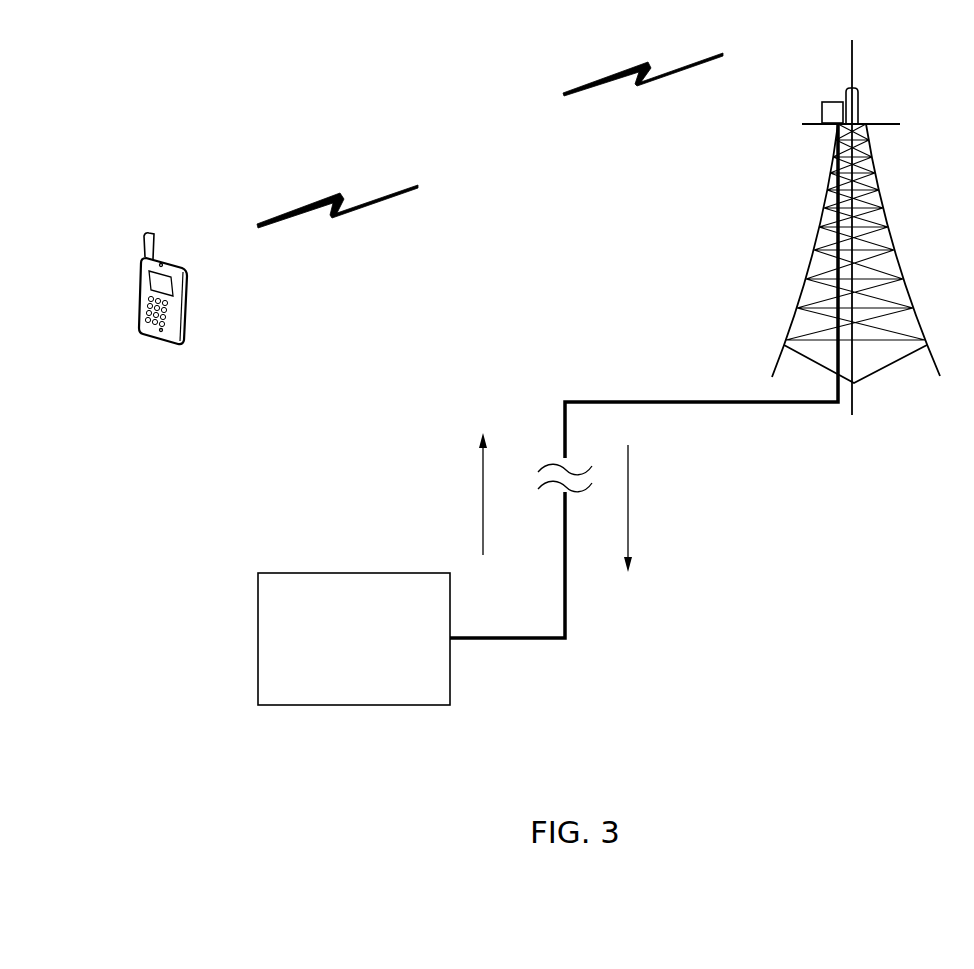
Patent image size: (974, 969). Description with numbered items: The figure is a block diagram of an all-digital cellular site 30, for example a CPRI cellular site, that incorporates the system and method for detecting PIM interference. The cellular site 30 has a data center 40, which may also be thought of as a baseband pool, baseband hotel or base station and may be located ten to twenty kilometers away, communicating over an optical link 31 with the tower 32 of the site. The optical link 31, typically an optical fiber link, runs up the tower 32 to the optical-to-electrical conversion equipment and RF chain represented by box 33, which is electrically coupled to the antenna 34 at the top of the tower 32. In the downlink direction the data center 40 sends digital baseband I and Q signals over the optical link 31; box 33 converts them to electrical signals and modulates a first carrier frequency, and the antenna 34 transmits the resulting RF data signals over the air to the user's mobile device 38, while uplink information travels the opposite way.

The all-digital cellular site 30 is at (164, 130).
The optical link 31 is at (741, 405).
The tower 32 is at (887, 238).
The optical-to-electrical conversion equipment and RF chain 33 is at (822, 110).
The antenna 34 is at (857, 91).
The mobile device 38 is at (188, 273).
The data center 40 is at (365, 675).